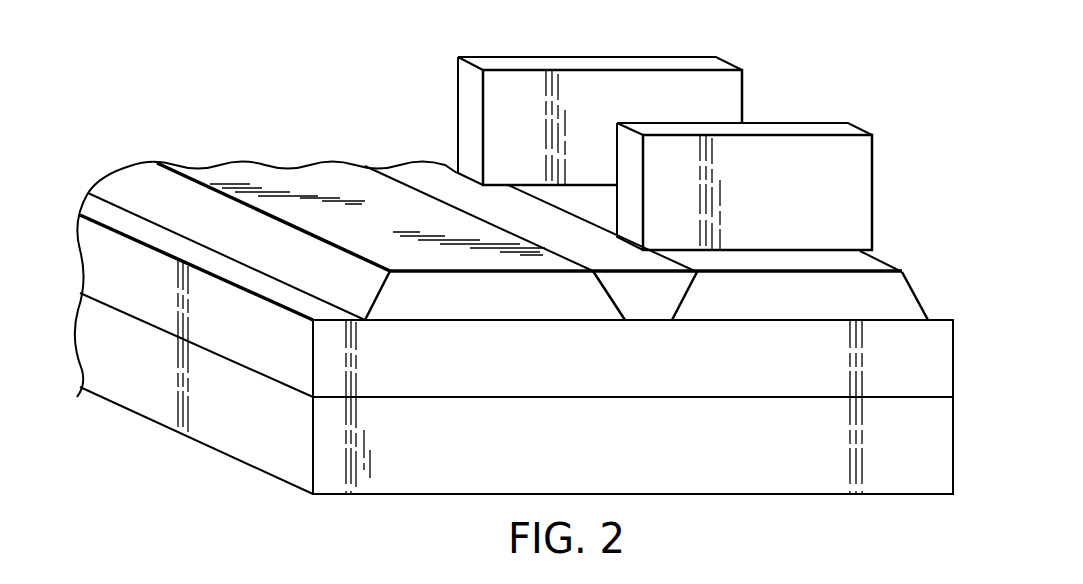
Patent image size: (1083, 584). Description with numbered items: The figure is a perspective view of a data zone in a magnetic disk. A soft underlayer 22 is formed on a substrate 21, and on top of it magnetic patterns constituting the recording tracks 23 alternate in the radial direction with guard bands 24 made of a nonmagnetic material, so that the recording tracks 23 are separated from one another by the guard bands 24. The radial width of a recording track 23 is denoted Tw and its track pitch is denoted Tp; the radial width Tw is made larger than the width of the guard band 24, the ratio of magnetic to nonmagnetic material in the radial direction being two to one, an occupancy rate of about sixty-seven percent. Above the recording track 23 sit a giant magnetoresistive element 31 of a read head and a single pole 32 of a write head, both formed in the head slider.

The substrate 21 is at (927, 480).
The soft underlayer 22 is at (940, 338).
The recording track 23 is at (278, 180).
The guard band 24 is at (422, 178).
The giant magnetoresistive element 31 is at (708, 64).
The single pole 32 is at (836, 131).
The radial width Tw is at (917, 303).
The track pitch Tp is at (802, 373).